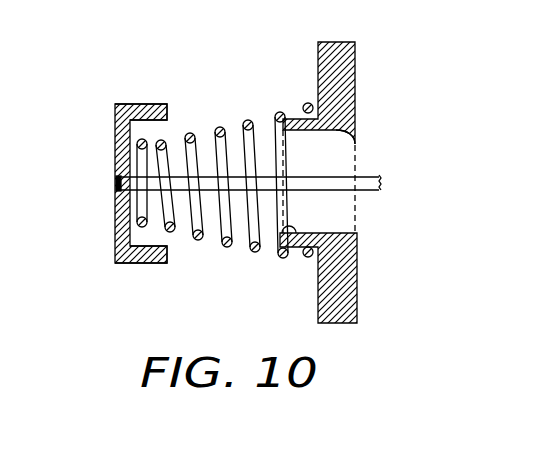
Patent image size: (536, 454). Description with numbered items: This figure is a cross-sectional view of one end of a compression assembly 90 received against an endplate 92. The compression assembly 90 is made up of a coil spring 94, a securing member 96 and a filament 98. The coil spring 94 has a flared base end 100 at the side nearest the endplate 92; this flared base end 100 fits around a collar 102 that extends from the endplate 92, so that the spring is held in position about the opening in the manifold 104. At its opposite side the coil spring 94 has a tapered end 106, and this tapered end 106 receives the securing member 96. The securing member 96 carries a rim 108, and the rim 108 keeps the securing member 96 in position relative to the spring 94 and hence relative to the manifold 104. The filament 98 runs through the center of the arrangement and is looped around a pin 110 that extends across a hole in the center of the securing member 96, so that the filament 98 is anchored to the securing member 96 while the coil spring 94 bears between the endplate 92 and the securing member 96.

The compression assembly 90 is at (389, 99).
The endplate 92 is at (318, 60).
The coil spring 94 is at (240, 134).
The securing member 96 is at (115, 122).
The filament 98 is at (370, 192).
The flared base end 100 is at (302, 110).
The collar 102 is at (278, 230).
The manifold 104 is at (357, 143).
The tapered end 106 is at (168, 145).
The rim 108 is at (145, 103).
The pin 110 is at (115, 185).